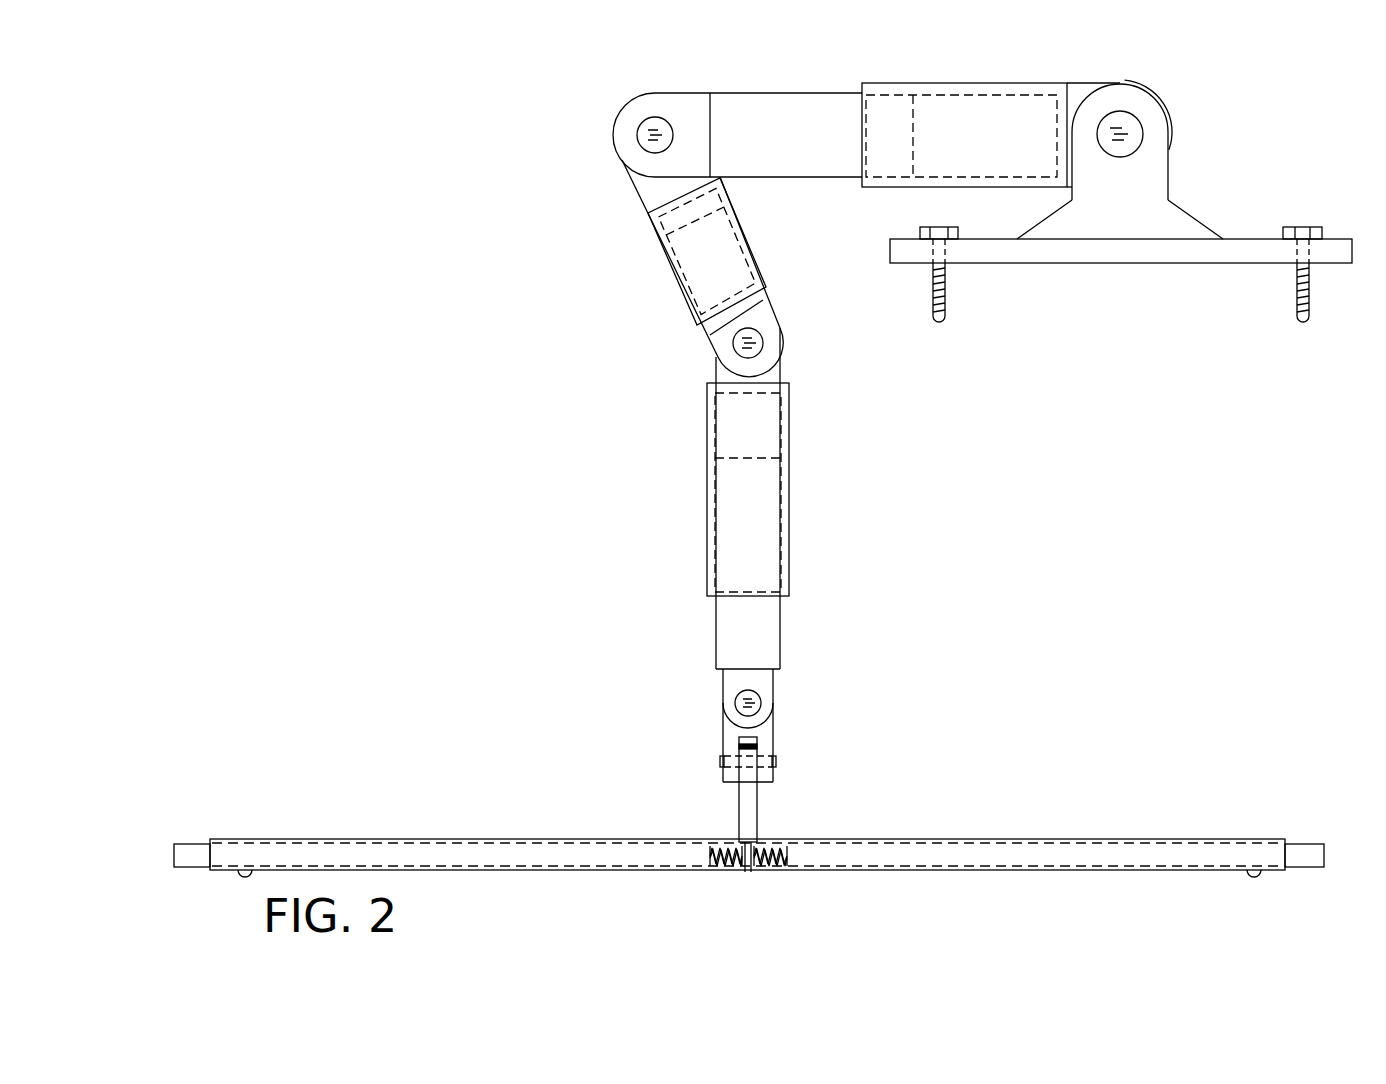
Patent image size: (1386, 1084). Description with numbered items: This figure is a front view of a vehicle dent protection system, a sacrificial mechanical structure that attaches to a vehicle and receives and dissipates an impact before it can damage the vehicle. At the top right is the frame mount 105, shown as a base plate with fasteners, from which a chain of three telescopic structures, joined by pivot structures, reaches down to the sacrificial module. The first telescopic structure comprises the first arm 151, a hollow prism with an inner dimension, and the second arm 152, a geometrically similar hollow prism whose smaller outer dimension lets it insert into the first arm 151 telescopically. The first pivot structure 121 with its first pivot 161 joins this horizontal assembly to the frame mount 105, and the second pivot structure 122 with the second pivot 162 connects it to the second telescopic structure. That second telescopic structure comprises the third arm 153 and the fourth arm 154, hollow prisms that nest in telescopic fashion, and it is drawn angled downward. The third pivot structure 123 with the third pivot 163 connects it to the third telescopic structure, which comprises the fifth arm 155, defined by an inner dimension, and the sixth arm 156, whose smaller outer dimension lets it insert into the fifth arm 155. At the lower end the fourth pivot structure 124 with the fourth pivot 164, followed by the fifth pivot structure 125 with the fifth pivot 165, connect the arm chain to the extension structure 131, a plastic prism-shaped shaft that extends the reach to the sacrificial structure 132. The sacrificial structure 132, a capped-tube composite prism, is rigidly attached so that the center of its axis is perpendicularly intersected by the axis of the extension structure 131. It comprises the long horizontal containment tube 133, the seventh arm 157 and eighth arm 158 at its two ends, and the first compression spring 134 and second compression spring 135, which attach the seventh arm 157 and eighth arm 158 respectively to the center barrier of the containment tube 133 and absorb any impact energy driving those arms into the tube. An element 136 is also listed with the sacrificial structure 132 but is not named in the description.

The frame mount 105 is at (1207, 208).
The first pivot structure 121 is at (1125, 100).
The first pivot 161 is at (1130, 127).
The second arm 152 is at (807, 122).
The first arm 151 is at (1003, 91).
The second pivot structure 122 is at (625, 97).
The second pivot 162 is at (663, 127).
The fourth arm 154 is at (776, 304).
The third arm 153 is at (745, 250).
The third pivot structure 123 is at (782, 325).
The third pivot 163 is at (738, 348).
The sixth arm 156 is at (783, 617).
The fifth arm 155 is at (790, 432).
The fourth pivot structure 124 is at (773, 685).
The fourth pivot 164 is at (742, 702).
The fifth pivot structure 125 is at (775, 777).
The fifth pivot 165 is at (720, 762).
The extension structure 131 is at (758, 798).
The sacrificial structure 132 is at (225, 390).
The containment tube 133 is at (912, 872).
The first compression spring 134 is at (770, 871).
The second compression spring 135 is at (723, 871).
The bar rollers 136 is at (749, 873).
The seventh arm 157 is at (1312, 838).
The eighth arm 158 is at (188, 848).